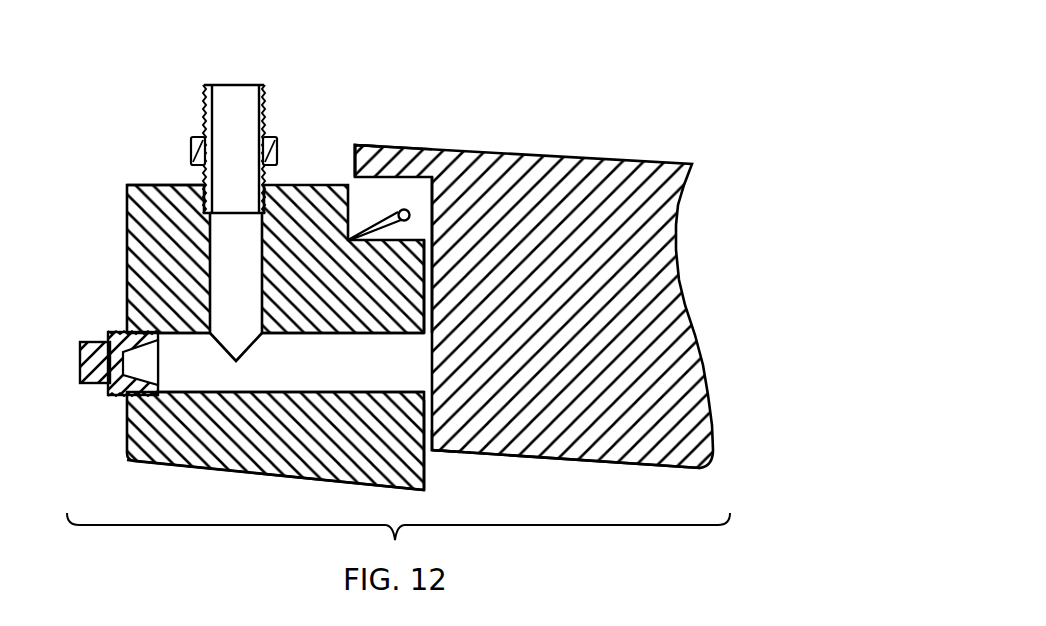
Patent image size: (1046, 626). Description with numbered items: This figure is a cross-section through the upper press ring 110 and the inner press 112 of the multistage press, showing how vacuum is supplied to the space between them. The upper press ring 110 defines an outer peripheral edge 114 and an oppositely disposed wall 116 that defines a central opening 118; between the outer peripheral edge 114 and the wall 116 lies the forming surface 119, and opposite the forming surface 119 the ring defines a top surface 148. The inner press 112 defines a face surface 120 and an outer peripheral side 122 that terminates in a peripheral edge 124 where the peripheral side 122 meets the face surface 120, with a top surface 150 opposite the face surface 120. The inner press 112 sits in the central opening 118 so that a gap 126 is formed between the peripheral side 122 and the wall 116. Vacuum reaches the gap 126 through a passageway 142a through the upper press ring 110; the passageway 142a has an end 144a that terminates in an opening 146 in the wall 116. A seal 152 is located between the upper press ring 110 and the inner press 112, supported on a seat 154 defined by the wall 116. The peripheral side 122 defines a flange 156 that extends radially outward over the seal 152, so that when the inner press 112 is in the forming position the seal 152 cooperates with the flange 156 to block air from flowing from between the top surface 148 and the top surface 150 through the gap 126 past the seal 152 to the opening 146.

The upper press ring 110 is at (178, 458).
The inner press 112 is at (598, 170).
The outer peripheral edge 114 is at (125, 260).
The wall 116 is at (433, 449).
The central opening 118 is at (428, 250).
The forming surface 119 is at (218, 468).
The face surface 120 is at (588, 466).
The outer peripheral side 122 is at (432, 252).
The peripheral edge 124 is at (433, 453).
The gap 126 is at (432, 307).
The passageway 142a is at (260, 267).
The end of passageway 144a is at (347, 382).
The opening in wall 146 is at (432, 362).
The top surface of upper press ring 148 is at (162, 190).
The top surface of inner press 150 is at (410, 143).
The seal 152 is at (375, 228).
The seat 154 is at (382, 242).
The flange 156 is at (373, 153).